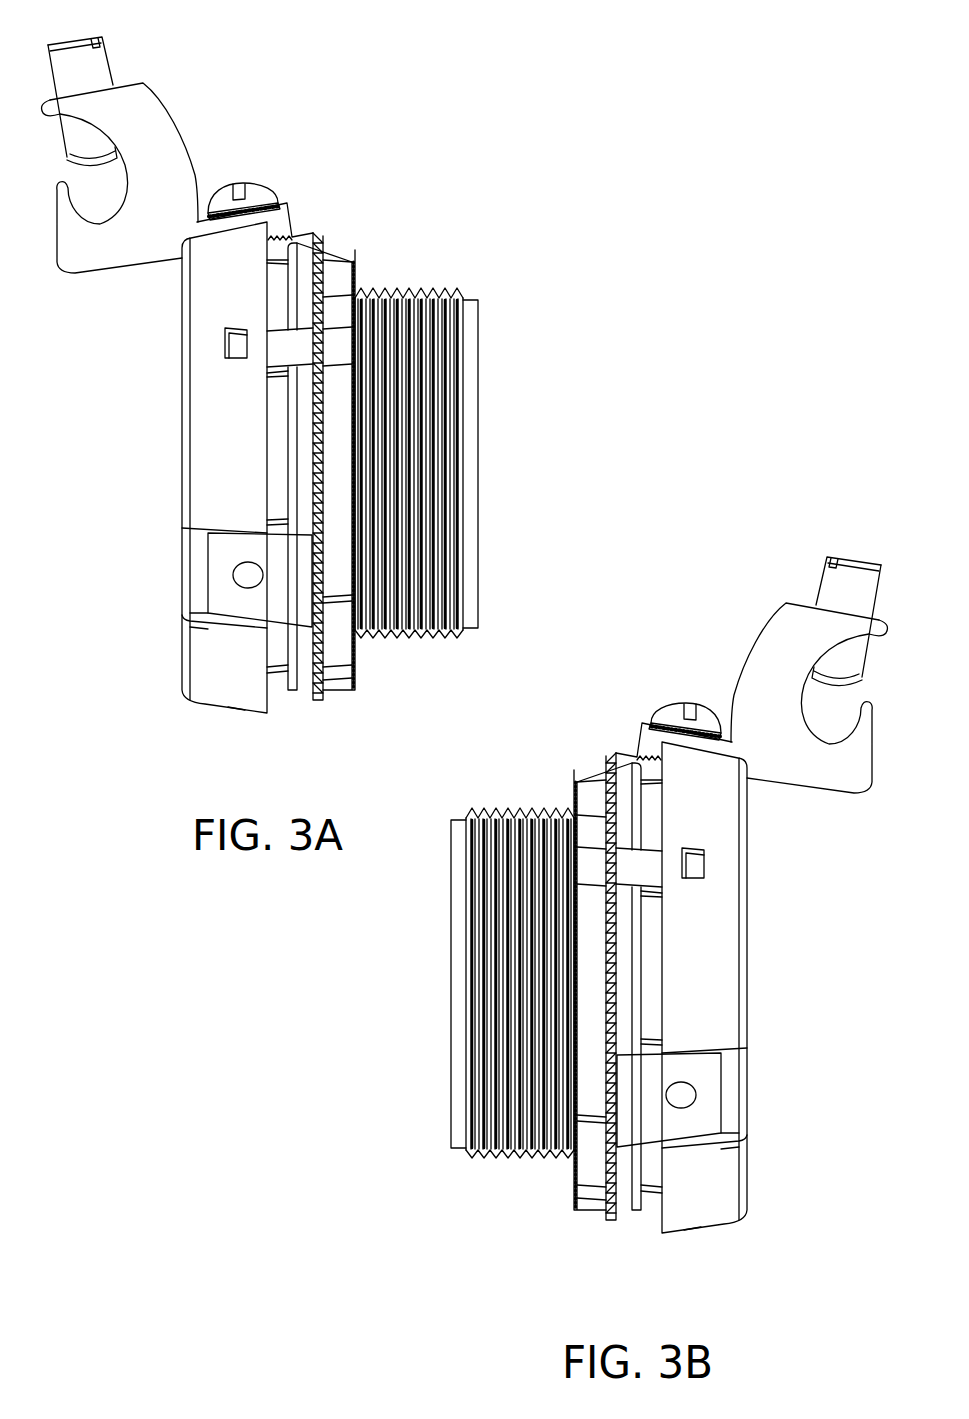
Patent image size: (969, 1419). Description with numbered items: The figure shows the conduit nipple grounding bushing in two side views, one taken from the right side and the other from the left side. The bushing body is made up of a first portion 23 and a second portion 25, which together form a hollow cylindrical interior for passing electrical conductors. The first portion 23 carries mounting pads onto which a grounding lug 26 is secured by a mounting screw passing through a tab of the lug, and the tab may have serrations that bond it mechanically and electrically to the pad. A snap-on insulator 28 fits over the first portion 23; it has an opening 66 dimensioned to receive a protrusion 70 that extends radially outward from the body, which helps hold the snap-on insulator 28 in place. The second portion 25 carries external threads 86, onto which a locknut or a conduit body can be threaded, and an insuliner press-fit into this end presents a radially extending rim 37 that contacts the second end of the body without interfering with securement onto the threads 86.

In FIG. 3A, the grounding lug 26 is at (190, 90).
In FIG. 3A, the second portion 25 is at (409, 440).
In FIG. 3A, the snap-on insulator 28 is at (146, 396).
In FIG. 3B, the snap-on insulator 28 is at (792, 911).
In FIG. 3A, the radially extending rim 37 is at (477, 606).
In FIG. 3B, the radially extending rim 37 is at (452, 933).
In FIG. 3A, the threads 86 is at (403, 638).
In FIG. 3A, the first portion 23 is at (300, 713).
In FIG. 3B, the protrusion 70 is at (704, 856).
In FIG. 3B, the opening 66 is at (690, 881).